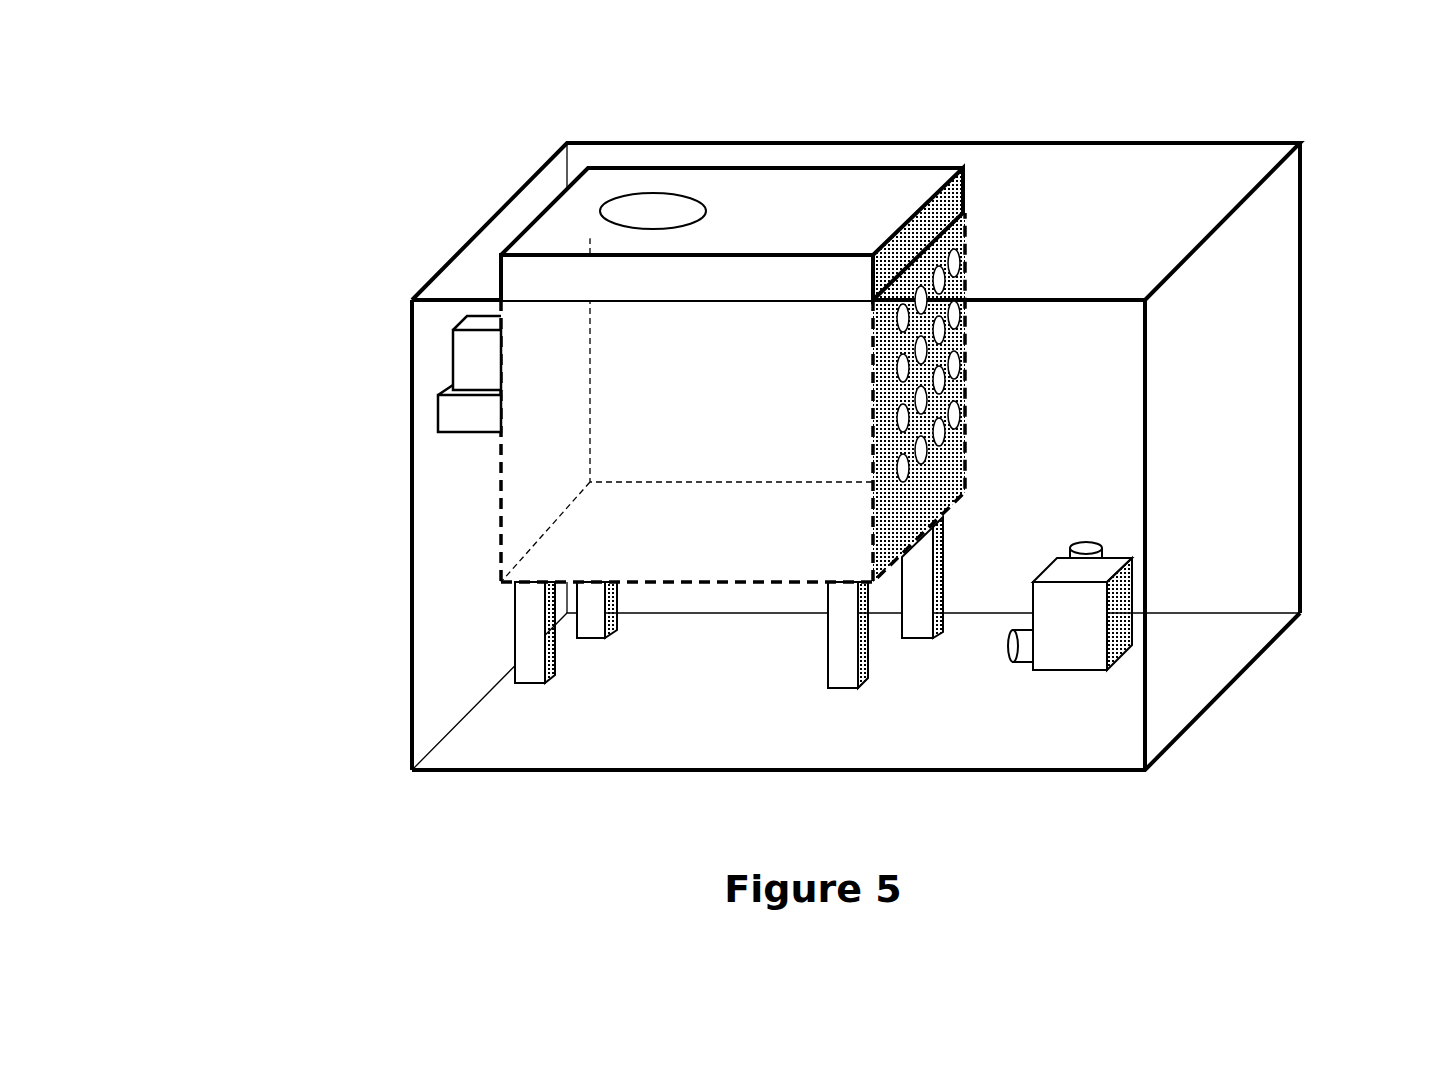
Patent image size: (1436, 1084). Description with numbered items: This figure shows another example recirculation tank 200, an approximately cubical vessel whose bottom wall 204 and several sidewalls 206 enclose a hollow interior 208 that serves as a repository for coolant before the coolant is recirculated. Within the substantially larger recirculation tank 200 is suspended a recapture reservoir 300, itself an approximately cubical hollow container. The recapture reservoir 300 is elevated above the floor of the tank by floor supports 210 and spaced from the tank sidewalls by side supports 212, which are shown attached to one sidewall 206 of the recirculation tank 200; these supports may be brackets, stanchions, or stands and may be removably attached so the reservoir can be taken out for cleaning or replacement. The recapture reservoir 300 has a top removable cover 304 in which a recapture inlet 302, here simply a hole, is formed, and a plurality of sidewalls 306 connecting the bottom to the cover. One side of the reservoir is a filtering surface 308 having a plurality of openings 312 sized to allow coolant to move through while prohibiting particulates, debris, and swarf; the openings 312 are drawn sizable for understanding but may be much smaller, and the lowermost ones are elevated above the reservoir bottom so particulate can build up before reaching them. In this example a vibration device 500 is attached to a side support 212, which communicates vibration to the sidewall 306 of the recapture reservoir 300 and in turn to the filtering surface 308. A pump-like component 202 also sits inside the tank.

The recirculation tank 200 is at (784, 469).
The pump 202 is at (1145, 602).
The bottom wall 204 is at (778, 772).
The sidewalls 206 is at (408, 738).
The hollow interior 208 is at (1132, 188).
The floor supports 210 is at (827, 632).
The side supports 212 is at (438, 413).
The recapture reservoir 300 is at (633, 333).
The recapture inlet 302 is at (665, 190).
The removable cover 304 is at (608, 192).
The sidewall 306 is at (498, 498).
The filtering surface 308 is at (966, 379).
The openings 312 is at (942, 432).
The vibration device 500 is at (453, 360).